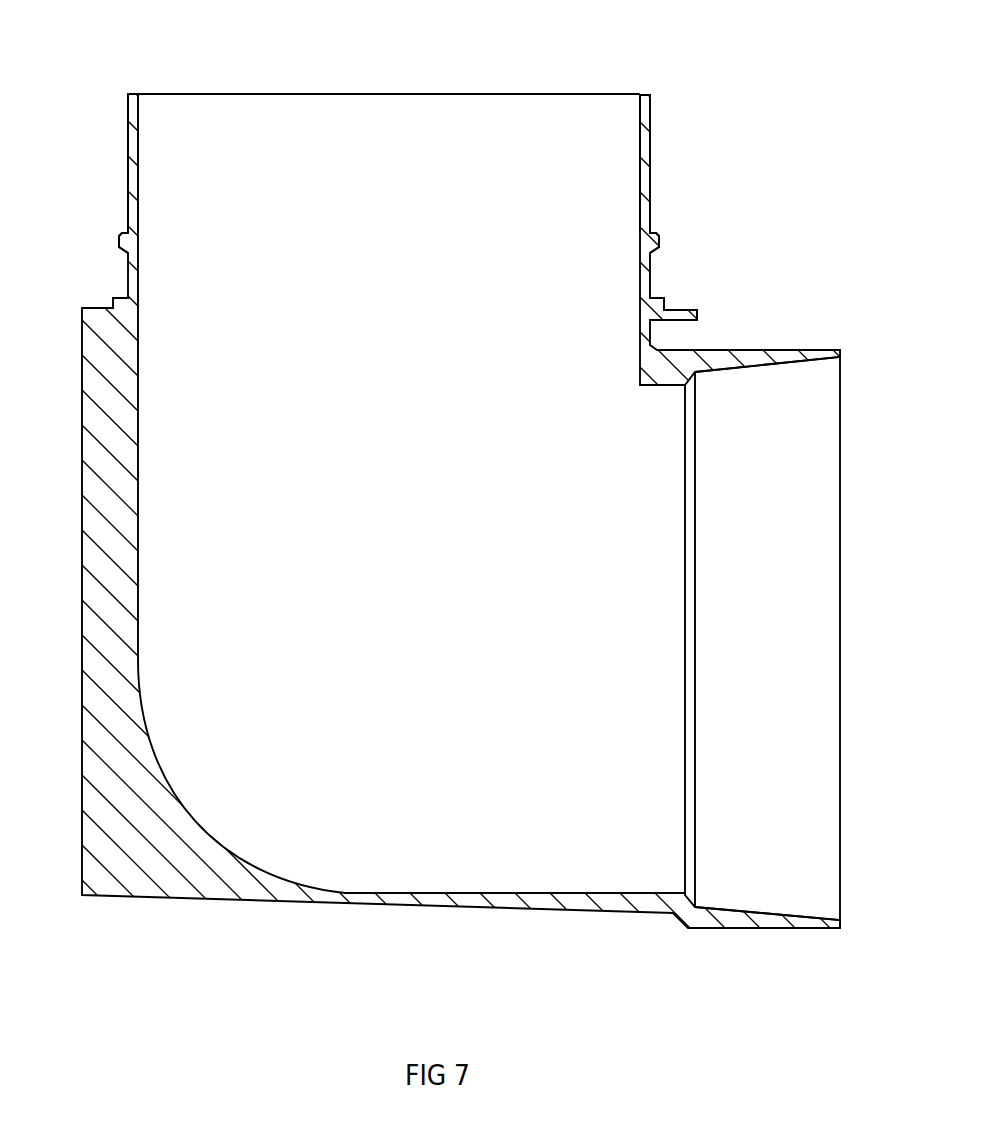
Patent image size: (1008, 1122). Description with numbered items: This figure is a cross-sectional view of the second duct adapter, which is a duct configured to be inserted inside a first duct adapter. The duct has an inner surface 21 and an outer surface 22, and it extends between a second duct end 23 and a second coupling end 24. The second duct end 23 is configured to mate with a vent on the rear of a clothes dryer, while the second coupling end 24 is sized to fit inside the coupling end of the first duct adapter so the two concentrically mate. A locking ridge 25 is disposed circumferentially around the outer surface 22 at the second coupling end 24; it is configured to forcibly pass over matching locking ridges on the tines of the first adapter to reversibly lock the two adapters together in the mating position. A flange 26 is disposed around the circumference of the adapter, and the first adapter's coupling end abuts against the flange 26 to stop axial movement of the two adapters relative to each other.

The inner surface 21 is at (638, 156).
The outer surface 22 is at (127, 180).
The second duct end 23 is at (831, 358).
The second coupling end 24 is at (130, 91).
The locking ridge 25 is at (118, 242).
The flange 26 is at (112, 304).